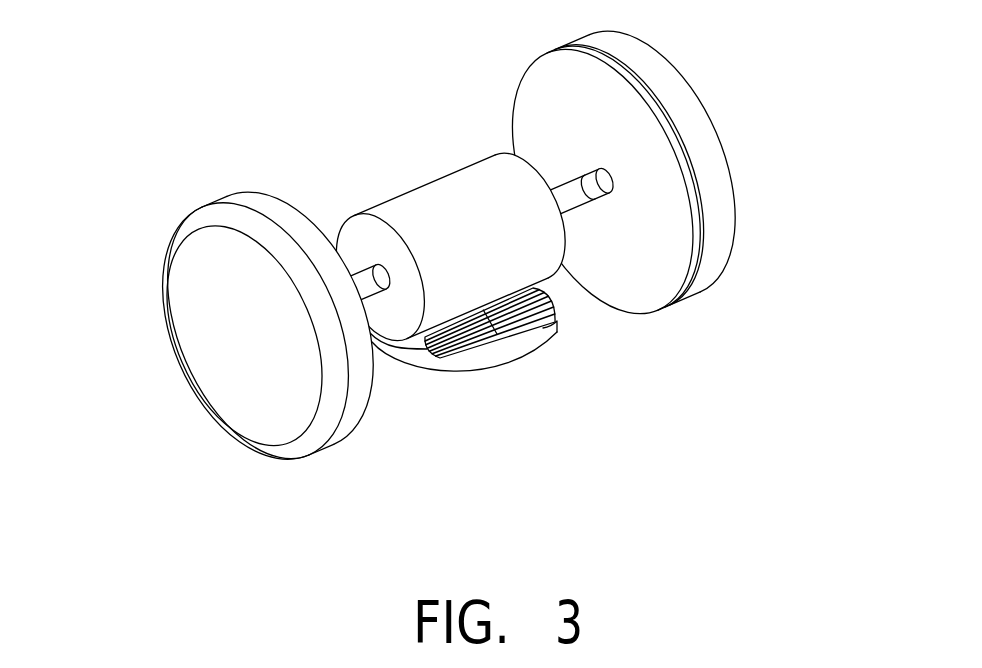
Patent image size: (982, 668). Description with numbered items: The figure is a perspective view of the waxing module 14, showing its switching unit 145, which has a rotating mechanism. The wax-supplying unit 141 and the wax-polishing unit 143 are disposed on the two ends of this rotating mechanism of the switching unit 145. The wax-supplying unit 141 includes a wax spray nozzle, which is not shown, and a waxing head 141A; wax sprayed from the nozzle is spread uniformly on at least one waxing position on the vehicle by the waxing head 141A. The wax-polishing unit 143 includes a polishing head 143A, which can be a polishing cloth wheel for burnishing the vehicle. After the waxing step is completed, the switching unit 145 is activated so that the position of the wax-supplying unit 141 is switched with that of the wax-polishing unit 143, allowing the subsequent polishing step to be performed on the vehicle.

The waxing module 14 is at (64, 58).
The wax-supplying unit 141 is at (700, 199).
The waxing head 141A is at (703, 107).
The wax-polishing unit 143 is at (207, 306).
The polishing head 143A is at (187, 277).
The switching unit 145 is at (547, 338).